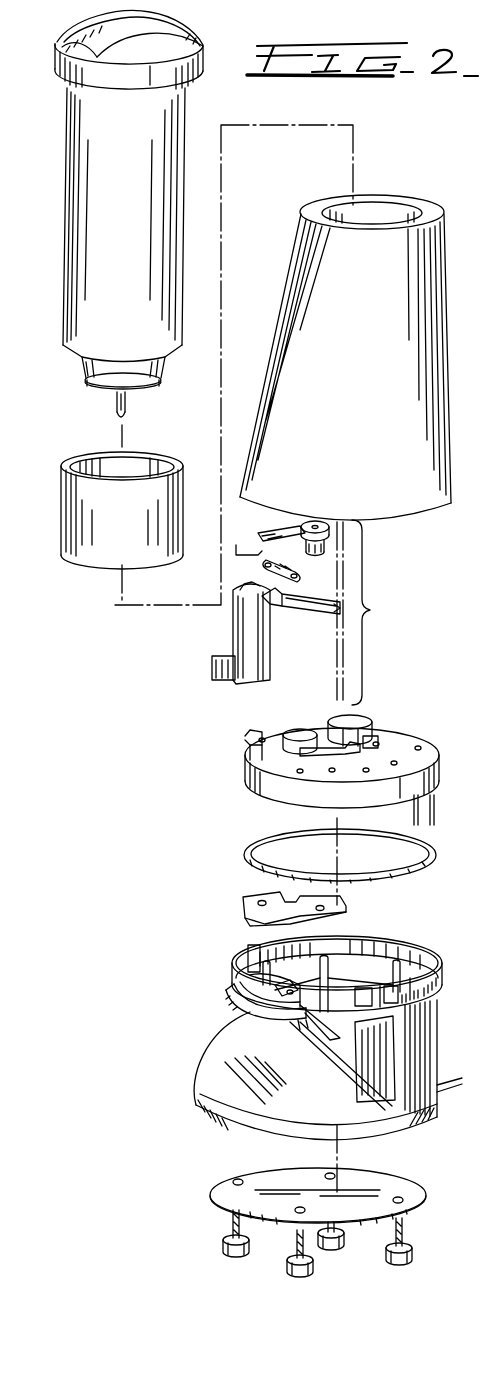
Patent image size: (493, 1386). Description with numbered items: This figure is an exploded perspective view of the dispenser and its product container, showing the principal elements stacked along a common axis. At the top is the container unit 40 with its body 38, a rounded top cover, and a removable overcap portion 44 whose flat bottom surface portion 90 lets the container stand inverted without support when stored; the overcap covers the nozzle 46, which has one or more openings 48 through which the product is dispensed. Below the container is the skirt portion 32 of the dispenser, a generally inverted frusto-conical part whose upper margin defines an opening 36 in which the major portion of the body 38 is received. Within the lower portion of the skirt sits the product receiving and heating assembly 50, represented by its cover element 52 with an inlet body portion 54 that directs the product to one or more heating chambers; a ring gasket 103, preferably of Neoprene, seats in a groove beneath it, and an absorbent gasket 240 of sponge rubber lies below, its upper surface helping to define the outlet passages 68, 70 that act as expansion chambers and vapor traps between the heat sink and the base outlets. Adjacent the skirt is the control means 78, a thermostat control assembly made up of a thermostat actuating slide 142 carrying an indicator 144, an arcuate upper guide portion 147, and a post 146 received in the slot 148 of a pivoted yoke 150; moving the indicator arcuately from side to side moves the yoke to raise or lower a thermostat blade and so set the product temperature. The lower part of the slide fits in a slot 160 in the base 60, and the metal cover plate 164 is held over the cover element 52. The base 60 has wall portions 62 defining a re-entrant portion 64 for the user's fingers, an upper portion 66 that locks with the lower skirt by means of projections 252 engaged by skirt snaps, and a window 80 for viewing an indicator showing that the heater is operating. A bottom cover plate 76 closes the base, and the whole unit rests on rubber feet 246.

The skirt portion 32 is at (440, 432).
The opening 36 is at (384, 206).
The body 38 is at (95, 180).
The container unit 40 is at (194, 127).
The overcap portion 44 is at (70, 512).
The nozzle 46 is at (128, 404).
The openings 48 is at (118, 416).
The product receiving and heating assembly 50 is at (446, 774).
The product receiving and heating assembly cover element 52 is at (412, 738).
The inlet body portion 54 is at (372, 727).
The base 60 is at (444, 1046).
The wall portions 62 is at (340, 1105).
The re-entrant portion 64 is at (253, 1040).
The upper portion 66 is at (432, 972).
The outlet passage 68 is at (246, 982).
The outlet passage 70 is at (302, 1032).
The bottom cover plate 76 is at (265, 1180).
The control means 78 is at (373, 612).
The window 80 is at (340, 1040).
The flat bottom surface portion 90 is at (103, 568).
The ring gasket 103 is at (428, 864).
The thermostat actuating slide 142 is at (247, 632).
The indicator 144 is at (222, 681).
The post 146 is at (310, 595).
The arcuate upper guide portion 147 is at (332, 622).
The slot 148 is at (240, 555).
The pivoted yoke 150 is at (296, 526).
The slot 160 is at (246, 992).
The metal cover plate 164 is at (300, 573).
The absorbent gasket 240 is at (346, 912).
The feet 246 is at (390, 1262).
The projections 252 is at (436, 1006).